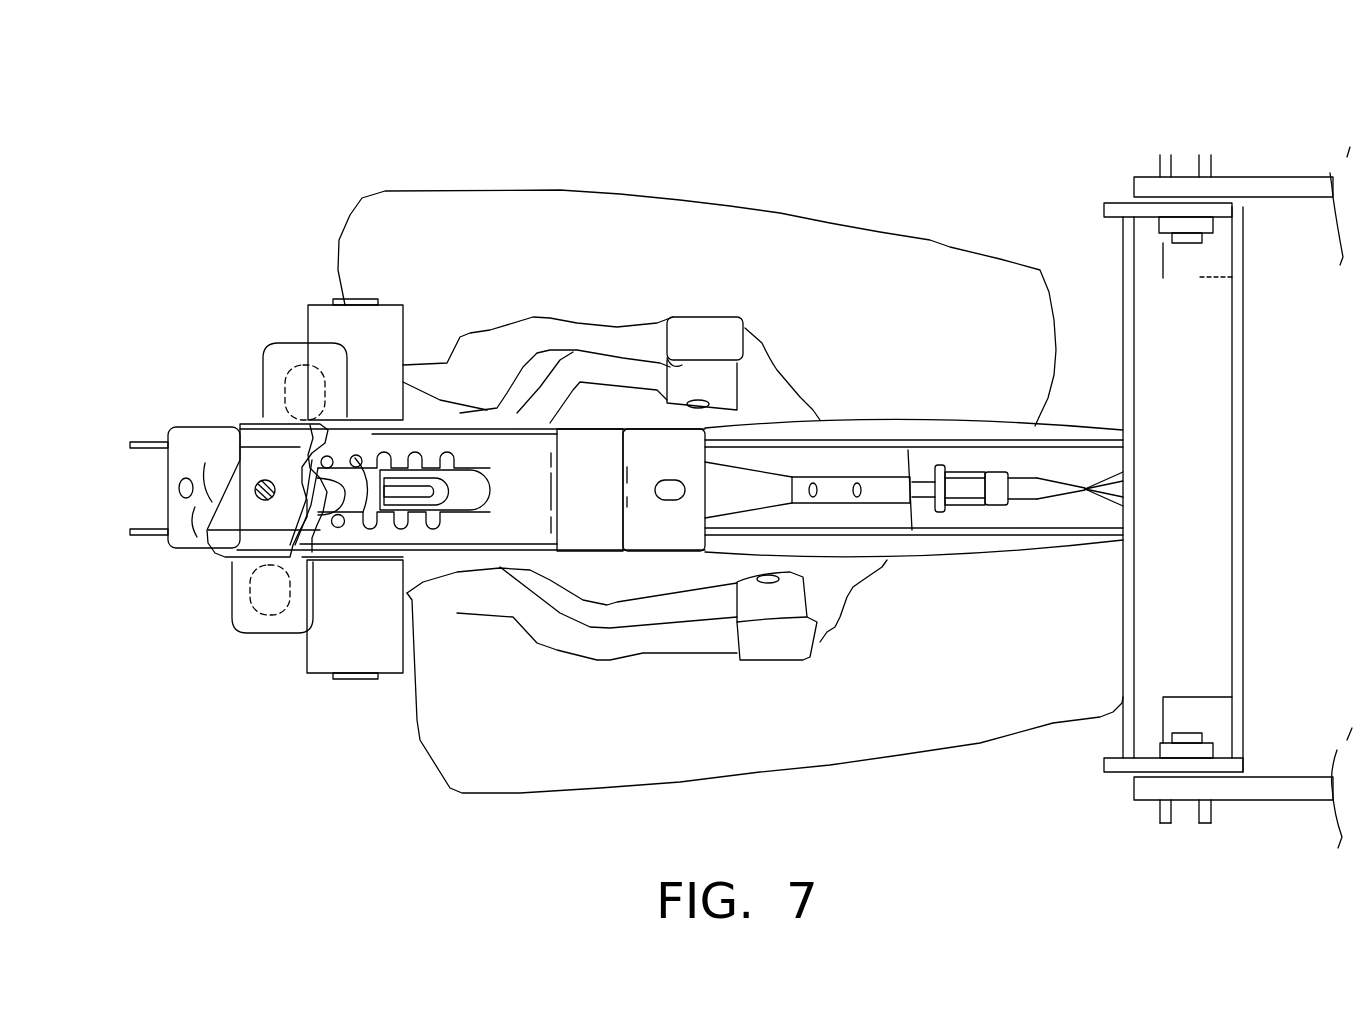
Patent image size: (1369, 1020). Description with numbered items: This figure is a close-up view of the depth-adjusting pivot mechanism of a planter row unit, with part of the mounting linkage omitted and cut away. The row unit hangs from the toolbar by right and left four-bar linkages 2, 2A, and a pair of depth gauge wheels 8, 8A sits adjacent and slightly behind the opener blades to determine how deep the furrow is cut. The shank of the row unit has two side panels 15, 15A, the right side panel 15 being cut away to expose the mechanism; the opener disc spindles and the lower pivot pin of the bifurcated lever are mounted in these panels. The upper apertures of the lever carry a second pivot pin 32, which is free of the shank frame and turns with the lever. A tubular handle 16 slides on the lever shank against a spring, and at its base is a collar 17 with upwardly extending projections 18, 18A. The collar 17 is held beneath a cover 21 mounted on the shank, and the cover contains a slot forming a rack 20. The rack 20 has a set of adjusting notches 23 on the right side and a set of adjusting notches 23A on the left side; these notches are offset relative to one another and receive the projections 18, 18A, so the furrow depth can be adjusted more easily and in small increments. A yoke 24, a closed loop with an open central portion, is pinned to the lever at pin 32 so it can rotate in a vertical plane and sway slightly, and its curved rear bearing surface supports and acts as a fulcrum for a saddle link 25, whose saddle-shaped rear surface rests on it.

The four-bar linkage 2 is at (1272, 808).
The four-bar linkage 2A is at (1267, 162).
The depth gauge wheel 8 is at (872, 743).
The depth gauge wheel 8A is at (872, 296).
The side panel 15 is at (973, 535).
The side panel 15A is at (963, 443).
The handle 16 is at (280, 608).
The collar 17 is at (360, 482).
The projection 18 is at (307, 562).
The projection 18A is at (332, 420).
The rack 20 is at (445, 497).
The cover 21 is at (543, 483).
The adjusting notches 23 is at (415, 522).
The adjusting notches 23A is at (420, 452).
The yoke 24 is at (497, 670).
The saddle link 25 is at (223, 555).
The second pivot pin 32 is at (388, 512).